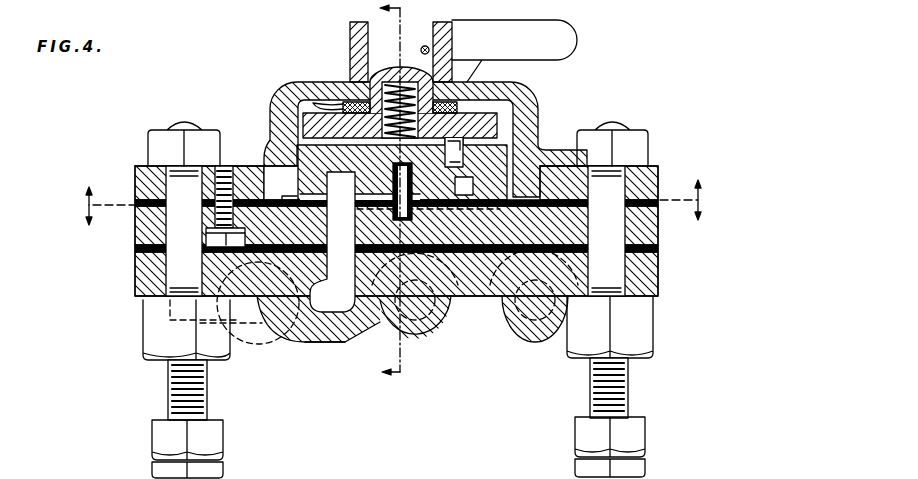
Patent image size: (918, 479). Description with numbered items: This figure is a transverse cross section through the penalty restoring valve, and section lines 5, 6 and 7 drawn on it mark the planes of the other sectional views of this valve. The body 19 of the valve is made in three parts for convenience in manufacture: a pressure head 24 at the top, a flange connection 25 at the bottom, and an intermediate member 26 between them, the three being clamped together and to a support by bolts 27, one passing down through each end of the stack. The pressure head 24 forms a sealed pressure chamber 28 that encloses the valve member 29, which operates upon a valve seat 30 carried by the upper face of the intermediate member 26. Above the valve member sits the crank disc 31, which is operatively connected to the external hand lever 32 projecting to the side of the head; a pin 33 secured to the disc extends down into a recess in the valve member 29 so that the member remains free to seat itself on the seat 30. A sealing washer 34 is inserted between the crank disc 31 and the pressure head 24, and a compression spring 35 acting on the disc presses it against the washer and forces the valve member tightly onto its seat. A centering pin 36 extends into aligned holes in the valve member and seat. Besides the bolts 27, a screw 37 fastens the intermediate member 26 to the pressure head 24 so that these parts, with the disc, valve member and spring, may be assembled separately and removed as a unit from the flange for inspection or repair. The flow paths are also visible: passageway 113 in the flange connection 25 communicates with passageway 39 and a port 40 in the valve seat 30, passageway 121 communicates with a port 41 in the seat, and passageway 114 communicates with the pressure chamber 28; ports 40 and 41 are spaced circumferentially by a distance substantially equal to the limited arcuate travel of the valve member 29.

The section line 5 is at (392, 192).
The section line 6 is at (392, 213).
The section line 7 is at (401, 195).
The valve body 19 is at (491, 316).
The pressure head 24 is at (660, 168).
The flange connection 25 is at (660, 273).
The intermediate member 26 is at (660, 233).
The bolts 27 is at (185, 126).
The pressure chamber 28 is at (517, 113).
The valve member 29 is at (512, 150).
The valve seat 30 is at (436, 191).
The crank disc 31 is at (492, 114).
The hand lever 32 is at (580, 42).
The pin 33 is at (463, 154).
The sealing washer 34 is at (319, 108).
The compression spring 35 is at (396, 88).
The pin 36 is at (413, 178).
The screw 37 is at (226, 166).
The passageway 39 is at (315, 325).
The port 40 is at (350, 240).
The port 41 is at (422, 238).
The passageway 113 is at (267, 336).
The passageway 114 is at (546, 330).
The passageway 121 is at (430, 324).